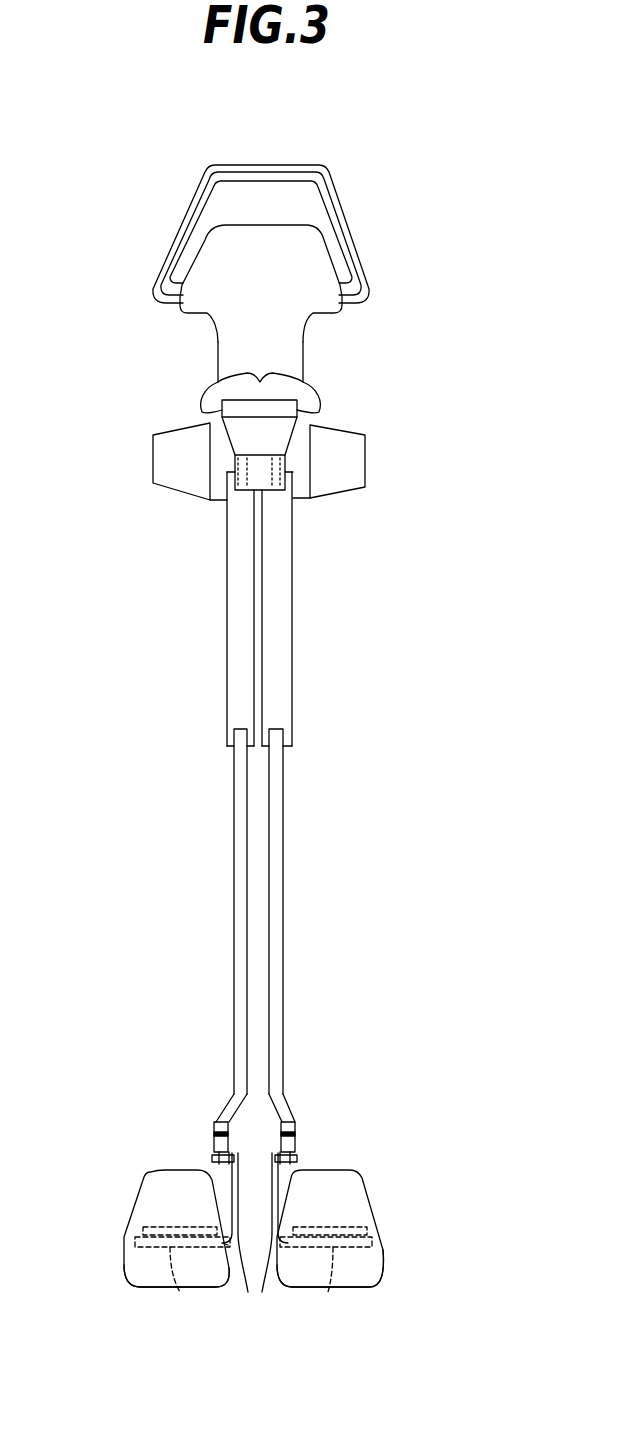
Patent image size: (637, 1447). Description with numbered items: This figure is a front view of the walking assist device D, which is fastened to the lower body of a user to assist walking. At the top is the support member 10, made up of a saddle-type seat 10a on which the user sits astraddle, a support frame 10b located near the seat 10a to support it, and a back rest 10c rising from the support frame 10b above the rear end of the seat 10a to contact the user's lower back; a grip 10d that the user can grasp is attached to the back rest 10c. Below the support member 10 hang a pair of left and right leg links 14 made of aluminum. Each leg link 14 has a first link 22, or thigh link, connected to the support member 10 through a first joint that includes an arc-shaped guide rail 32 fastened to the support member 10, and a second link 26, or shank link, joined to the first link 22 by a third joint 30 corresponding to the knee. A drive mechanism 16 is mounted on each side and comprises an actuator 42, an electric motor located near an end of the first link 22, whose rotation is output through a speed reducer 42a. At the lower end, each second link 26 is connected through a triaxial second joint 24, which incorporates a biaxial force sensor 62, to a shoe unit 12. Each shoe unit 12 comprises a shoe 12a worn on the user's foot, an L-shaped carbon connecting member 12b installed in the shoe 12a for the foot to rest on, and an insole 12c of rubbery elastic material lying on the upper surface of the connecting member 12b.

The walking assist device D is at (371, 170).
The support member 10 is at (328, 377).
The saddle-type seat 10a is at (212, 403).
The support frame 10b is at (292, 408).
The back rest 10c is at (327, 256).
The grip 10d is at (275, 165).
The drive mechanism 16 is at (139, 430).
The actuator 42 is at (153, 461).
The speed reducer 42a is at (222, 500).
The arc-shaped guide rail 32 is at (235, 478).
The leg link 14 is at (149, 642).
The first link 22 is at (214, 621).
The third joint 30 is at (213, 741).
The second link 26 is at (235, 978).
The second joint 24 is at (208, 1113).
The biaxial force sensor 62 is at (212, 1143).
The shoe unit 12 is at (125, 1183).
The shoe 12a is at (143, 1253).
The connecting member 12b is at (254, 1237).
The insole 12c is at (135, 1237).